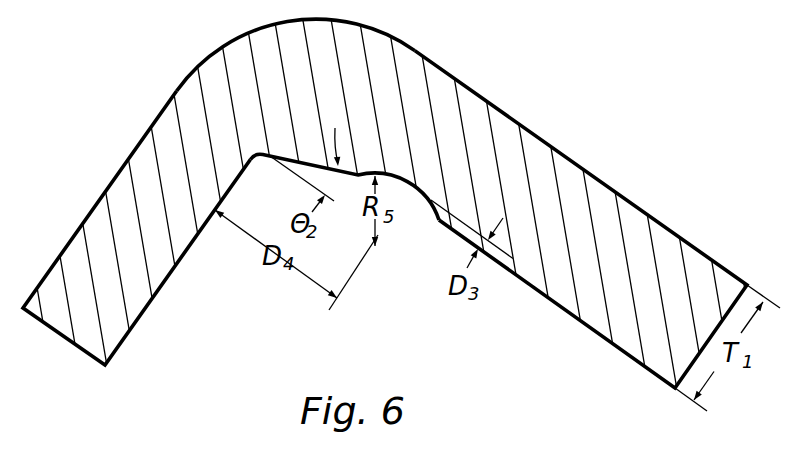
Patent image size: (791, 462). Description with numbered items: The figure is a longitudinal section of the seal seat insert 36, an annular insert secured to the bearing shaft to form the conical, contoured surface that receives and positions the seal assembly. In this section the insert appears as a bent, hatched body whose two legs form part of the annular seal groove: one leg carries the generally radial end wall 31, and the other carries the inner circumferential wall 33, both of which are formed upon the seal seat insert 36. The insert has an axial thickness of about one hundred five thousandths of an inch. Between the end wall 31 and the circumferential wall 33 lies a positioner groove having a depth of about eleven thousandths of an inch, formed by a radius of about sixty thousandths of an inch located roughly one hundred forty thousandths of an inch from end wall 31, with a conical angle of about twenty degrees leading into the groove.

The end wall 31 is at (165, 284).
The circumferential wall 33 is at (607, 341).
The seal seat insert 36 is at (520, 158).